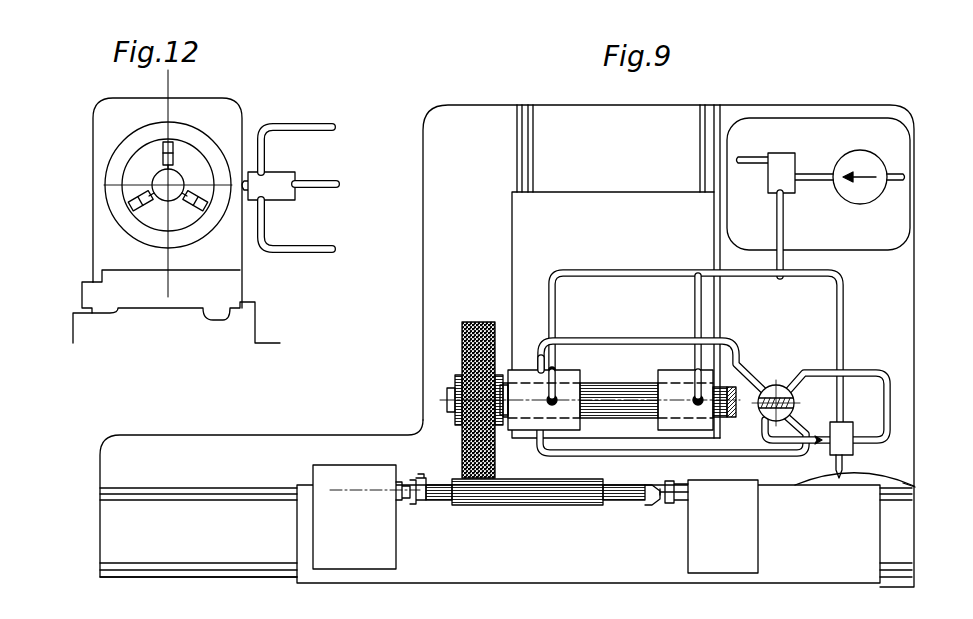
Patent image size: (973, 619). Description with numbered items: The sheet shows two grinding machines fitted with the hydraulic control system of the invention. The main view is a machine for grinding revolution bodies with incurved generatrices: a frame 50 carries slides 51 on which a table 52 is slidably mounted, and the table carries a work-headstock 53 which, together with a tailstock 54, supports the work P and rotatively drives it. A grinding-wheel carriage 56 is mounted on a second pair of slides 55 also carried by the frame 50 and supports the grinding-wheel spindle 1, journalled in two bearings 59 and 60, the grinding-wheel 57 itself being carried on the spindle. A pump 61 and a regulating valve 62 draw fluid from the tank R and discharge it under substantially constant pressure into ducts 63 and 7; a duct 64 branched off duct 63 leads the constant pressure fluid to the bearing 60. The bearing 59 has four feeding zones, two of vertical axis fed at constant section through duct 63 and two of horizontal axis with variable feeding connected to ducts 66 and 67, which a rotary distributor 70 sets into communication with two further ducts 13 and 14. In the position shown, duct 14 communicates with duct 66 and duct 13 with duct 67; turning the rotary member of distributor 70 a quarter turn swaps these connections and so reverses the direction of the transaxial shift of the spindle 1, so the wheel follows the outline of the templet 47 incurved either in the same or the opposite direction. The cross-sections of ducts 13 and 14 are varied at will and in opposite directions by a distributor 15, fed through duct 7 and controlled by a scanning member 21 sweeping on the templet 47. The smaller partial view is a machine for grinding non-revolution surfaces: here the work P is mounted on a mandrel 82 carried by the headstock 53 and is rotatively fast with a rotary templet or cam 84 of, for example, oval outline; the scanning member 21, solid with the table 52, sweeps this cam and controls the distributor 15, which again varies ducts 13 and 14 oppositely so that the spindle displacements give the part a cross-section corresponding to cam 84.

In FIG. 9, the grinding-wheel spindle 1 is at (622, 390).
In FIG. 12, the duct 7 is at (324, 184).
In FIG. 9, the duct 7 is at (846, 306).
In FIG. 12, the duct 13 is at (304, 130).
In FIG. 9, the duct 13 is at (816, 443).
In FIG. 12, the duct 14 is at (300, 252).
In FIG. 9, the duct 14 is at (896, 380).
In FIG. 12, the distributor 15 is at (274, 176).
In FIG. 9, the distributor 15 is at (856, 412).
In FIG. 12, the scanning member 21 is at (248, 180).
In FIG. 9, the scanning member 21 is at (848, 468).
In FIG. 9, the templet 47 is at (916, 487).
In FIG. 9, the frame 50 is at (234, 562).
In FIG. 9, the slides 51 is at (163, 495).
In FIG. 12, the table 52 is at (176, 306).
In FIG. 9, the table 52 is at (478, 575).
In FIG. 12, the work-headstock 53 is at (97, 136).
In FIG. 9, the work-headstock 53 is at (398, 532).
In FIG. 9, the tailstock 54 is at (756, 537).
In FIG. 9, the second pair of slides 55 is at (530, 112).
In FIG. 9, the grinding-wheel carriage 56 is at (510, 228).
In FIG. 9, the grinding-wheel 57 is at (458, 354).
In FIG. 9, the bearing 59 is at (524, 371).
In FIG. 9, the bearing 60 is at (686, 374).
In FIG. 9, the pump 61 is at (876, 158).
In FIG. 9, the regulating valve 62 is at (766, 190).
In FIG. 9, the duct 63 is at (789, 220).
In FIG. 9, the duct 64 is at (698, 310).
In FIG. 9, the duct 66 is at (592, 344).
In FIG. 9, the duct 67 is at (754, 464).
In FIG. 9, the rotary distributor 70 is at (795, 404).
In FIG. 12, the mandrel 82 is at (142, 148).
In FIG. 12, the rotary templet 84 is at (108, 218).
In FIG. 12, the work P is at (180, 180).
In FIG. 9, the work P is at (526, 509).
In FIG. 9, the fluid tank R is at (912, 152).